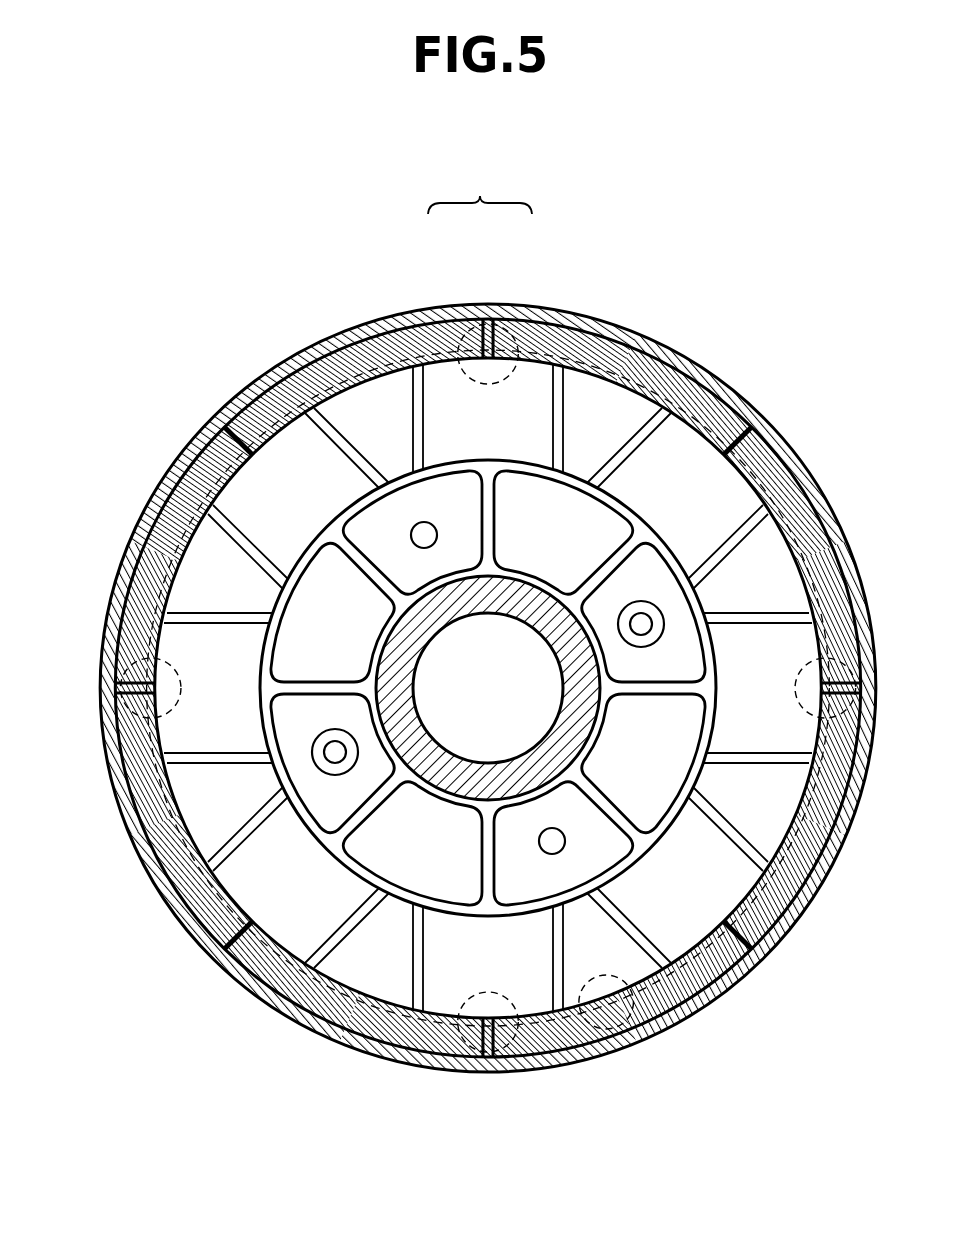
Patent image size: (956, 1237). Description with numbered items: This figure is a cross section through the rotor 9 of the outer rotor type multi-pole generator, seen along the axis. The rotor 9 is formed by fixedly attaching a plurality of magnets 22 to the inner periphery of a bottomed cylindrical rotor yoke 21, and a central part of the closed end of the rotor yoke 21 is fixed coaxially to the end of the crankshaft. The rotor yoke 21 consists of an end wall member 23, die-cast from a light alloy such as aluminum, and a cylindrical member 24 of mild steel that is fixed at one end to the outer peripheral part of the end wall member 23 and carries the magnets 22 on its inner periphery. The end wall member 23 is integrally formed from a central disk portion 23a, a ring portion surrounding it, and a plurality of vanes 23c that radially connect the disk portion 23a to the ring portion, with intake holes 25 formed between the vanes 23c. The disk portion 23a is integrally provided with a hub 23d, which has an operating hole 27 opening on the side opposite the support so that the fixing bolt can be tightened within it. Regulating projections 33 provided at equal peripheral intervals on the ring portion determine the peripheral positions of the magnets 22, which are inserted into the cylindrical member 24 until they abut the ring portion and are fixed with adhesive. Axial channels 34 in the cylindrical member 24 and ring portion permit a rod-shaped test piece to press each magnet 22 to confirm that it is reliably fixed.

The rotor 9 is at (263, 368).
The rotor yoke 21 is at (480, 190).
The magnets 22 is at (353, 330).
The end wall member 23 is at (524, 299).
The cylindrical member 24 is at (418, 308).
The intake holes 25 is at (787, 547).
The operating hole 27 is at (506, 628).
The regulating projections 33 is at (487, 362).
The channels 34 is at (605, 1030).
The disk portion 23a is at (598, 530).
The vanes 23c is at (697, 550).
The hub 23d is at (462, 778).